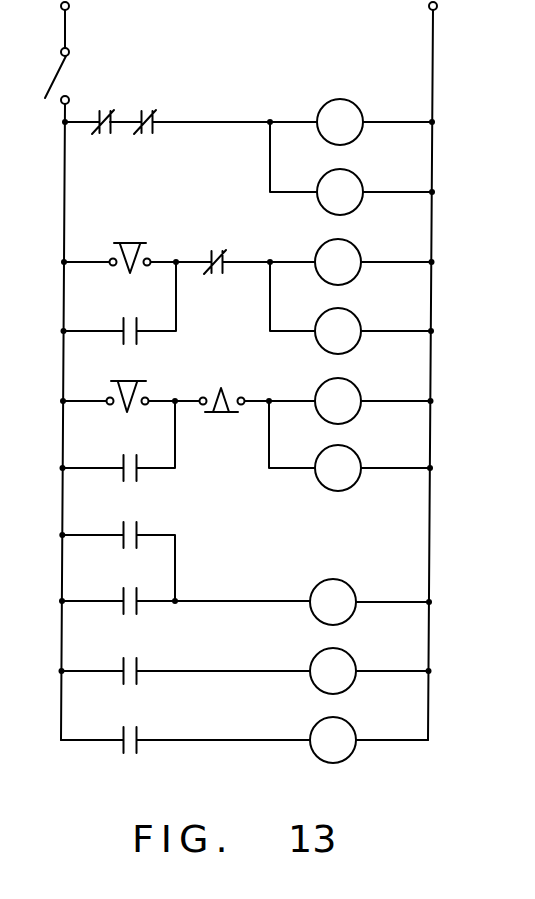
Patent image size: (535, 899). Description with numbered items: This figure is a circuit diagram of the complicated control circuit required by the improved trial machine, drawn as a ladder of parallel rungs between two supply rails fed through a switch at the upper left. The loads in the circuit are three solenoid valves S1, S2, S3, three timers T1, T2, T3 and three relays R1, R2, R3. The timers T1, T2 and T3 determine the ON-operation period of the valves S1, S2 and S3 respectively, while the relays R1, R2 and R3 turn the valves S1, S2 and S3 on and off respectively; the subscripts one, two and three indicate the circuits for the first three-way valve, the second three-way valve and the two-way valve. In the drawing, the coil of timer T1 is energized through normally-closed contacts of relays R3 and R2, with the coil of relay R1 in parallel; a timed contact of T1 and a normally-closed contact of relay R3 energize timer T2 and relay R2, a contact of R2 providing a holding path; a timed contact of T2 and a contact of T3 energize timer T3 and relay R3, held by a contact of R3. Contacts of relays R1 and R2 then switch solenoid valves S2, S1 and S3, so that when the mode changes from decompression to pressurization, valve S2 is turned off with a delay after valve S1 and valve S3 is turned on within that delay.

The timer T1 is at (237, 186).
The timer T2 is at (234, 325).
The timer T3 is at (281, 389).
The relay R1 is at (240, 426).
The relay R2 is at (239, 415).
The relay R3 is at (225, 284).
The solenoid valve S1 is at (333, 671).
The solenoid valve S2 is at (333, 602).
The solenoid valve S3 is at (333, 740).